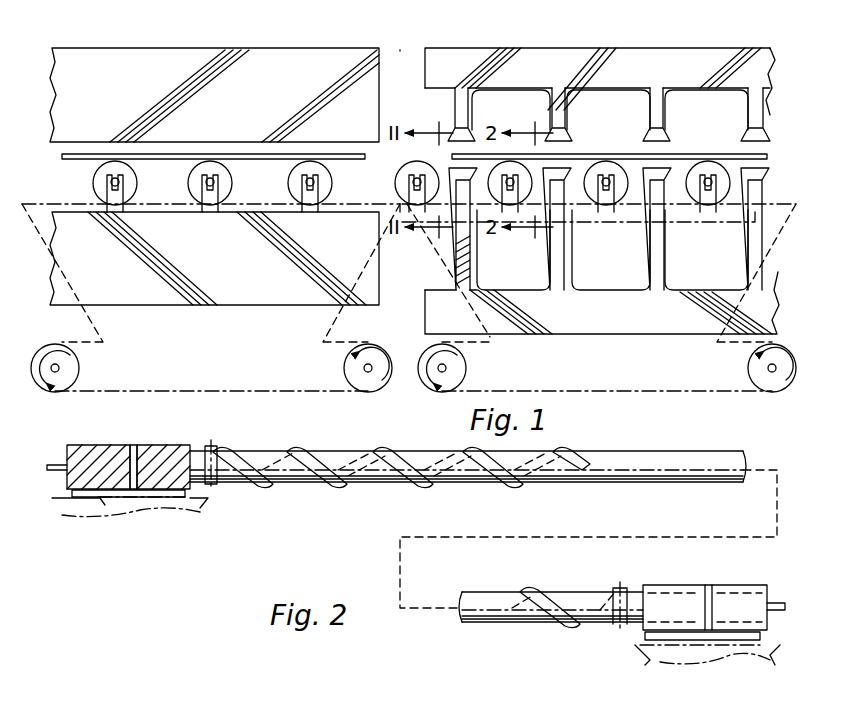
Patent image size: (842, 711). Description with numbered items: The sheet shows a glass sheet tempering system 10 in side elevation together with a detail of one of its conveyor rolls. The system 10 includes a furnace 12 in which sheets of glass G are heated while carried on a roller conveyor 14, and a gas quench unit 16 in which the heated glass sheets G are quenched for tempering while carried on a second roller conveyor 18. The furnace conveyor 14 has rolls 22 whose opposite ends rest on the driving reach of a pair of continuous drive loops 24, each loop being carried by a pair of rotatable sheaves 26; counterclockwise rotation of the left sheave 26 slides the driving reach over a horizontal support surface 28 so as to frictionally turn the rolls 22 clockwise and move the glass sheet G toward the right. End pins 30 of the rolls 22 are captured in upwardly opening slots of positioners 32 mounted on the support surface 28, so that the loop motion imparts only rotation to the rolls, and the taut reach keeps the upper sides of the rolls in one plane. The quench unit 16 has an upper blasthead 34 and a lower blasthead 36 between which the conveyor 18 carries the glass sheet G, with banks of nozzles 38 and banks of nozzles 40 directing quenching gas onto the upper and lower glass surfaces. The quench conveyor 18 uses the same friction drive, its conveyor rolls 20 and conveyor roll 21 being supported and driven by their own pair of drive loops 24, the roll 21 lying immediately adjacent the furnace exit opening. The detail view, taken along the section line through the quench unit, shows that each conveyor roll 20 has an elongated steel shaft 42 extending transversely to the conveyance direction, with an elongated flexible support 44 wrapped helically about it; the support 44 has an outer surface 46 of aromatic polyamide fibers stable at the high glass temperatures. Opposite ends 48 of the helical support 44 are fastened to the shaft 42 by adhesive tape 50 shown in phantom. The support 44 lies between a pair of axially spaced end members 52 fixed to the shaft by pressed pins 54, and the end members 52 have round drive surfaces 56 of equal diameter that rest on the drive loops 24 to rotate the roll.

In FIG. 1, the glass sheet tempering system 10 is at (402, 48).
In FIG. 1, the furnace 12 is at (242, 46).
In FIG. 1, the roller conveyor 14 is at (88, 178).
In FIG. 1, the gas quench unit 16 is at (585, 46).
In FIG. 1, the roller conveyor 18 is at (740, 165).
In FIG. 1, the conveyor roll 20 is at (492, 172).
In FIG. 2, the conveyor roll 20 is at (540, 488).
In FIG. 1, the conveyor roll 21 is at (410, 178).
In FIG. 1, the rolls 22 is at (135, 156).
In FIG. 1, the continuous drive loop 24 is at (44, 236).
In FIG. 2, the continuous drive loop 24 is at (63, 500).
In FIG. 1, the rotatable sheave 26 is at (60, 345).
In FIG. 1, the horizontal support surface 28 is at (180, 213).
In FIG. 2, the horizontal support surface 28 is at (100, 496).
In FIG. 1, the end pin 30 is at (115, 178).
In FIG. 2, the end pin 30 is at (47, 470).
In FIG. 1, the positioner 32 is at (122, 193).
In FIG. 1, the upper blasthead 34 is at (773, 58).
In FIG. 1, the lower blasthead 36 is at (776, 310).
In FIG. 1, the nozzles 38 is at (462, 98).
In FIG. 1, the nozzles 40 is at (752, 192).
In FIG. 2, the steel shaft 42 is at (660, 455).
In FIG. 2, the support 44 is at (330, 486).
In FIG. 2, the outer surface 46 is at (305, 455).
In FIG. 2, the opposite ends 48 is at (218, 450).
In FIG. 2, the adhesive tape 50 is at (216, 482).
In FIG. 2, the end member 52 is at (132, 446).
In FIG. 2, the pressed pin 54 is at (148, 446).
In FIG. 2, the round drive surface 56 is at (80, 446).
In FIG. 1, the glass sheet G is at (244, 155).